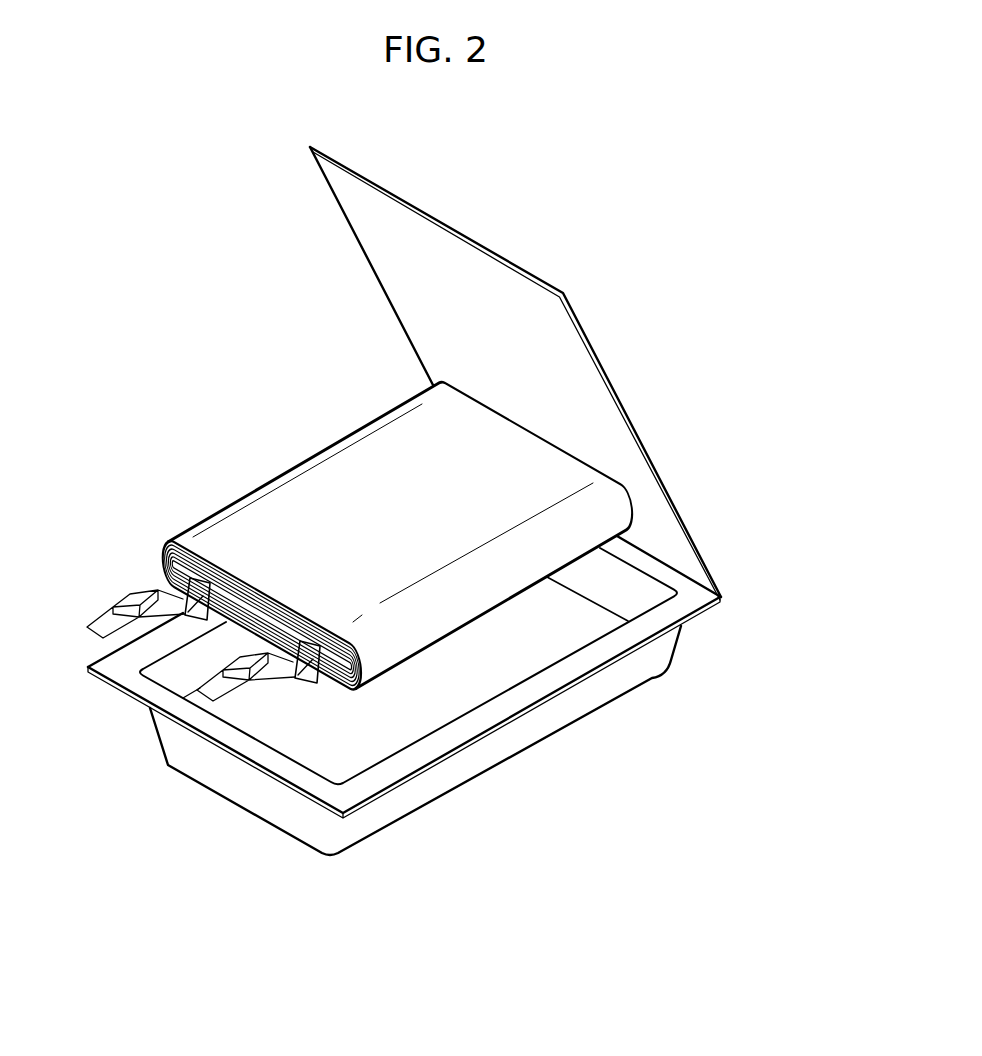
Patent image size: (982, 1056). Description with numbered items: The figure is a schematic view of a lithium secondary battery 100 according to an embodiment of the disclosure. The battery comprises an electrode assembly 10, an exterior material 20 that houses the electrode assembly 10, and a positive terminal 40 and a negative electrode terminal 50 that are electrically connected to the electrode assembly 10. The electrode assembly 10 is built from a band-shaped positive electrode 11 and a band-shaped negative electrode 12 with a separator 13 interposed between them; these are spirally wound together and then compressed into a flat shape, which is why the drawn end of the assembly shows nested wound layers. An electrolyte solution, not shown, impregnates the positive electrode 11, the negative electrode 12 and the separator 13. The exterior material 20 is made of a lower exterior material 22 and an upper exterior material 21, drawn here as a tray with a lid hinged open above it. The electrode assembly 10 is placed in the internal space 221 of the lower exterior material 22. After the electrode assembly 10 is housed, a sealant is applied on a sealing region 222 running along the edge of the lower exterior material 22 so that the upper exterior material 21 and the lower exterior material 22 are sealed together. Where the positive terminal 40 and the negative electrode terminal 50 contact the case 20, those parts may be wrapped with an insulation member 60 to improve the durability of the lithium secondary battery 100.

The lithium secondary battery 100 is at (158, 172).
The electrode assembly 10 is at (364, 529).
The positive electrode 11 is at (166, 543).
The negative electrode 12 is at (162, 563).
The separator 13 is at (162, 547).
The exterior material 20 is at (771, 600).
The upper exterior material 21 is at (693, 570).
The lower exterior material 22 is at (430, 701).
The internal space 221 is at (455, 685).
The sealing region 222 is at (610, 650).
The positive terminal 40 is at (188, 607).
The negative electrode terminal 50 is at (303, 683).
The insulation member 60 is at (126, 600).